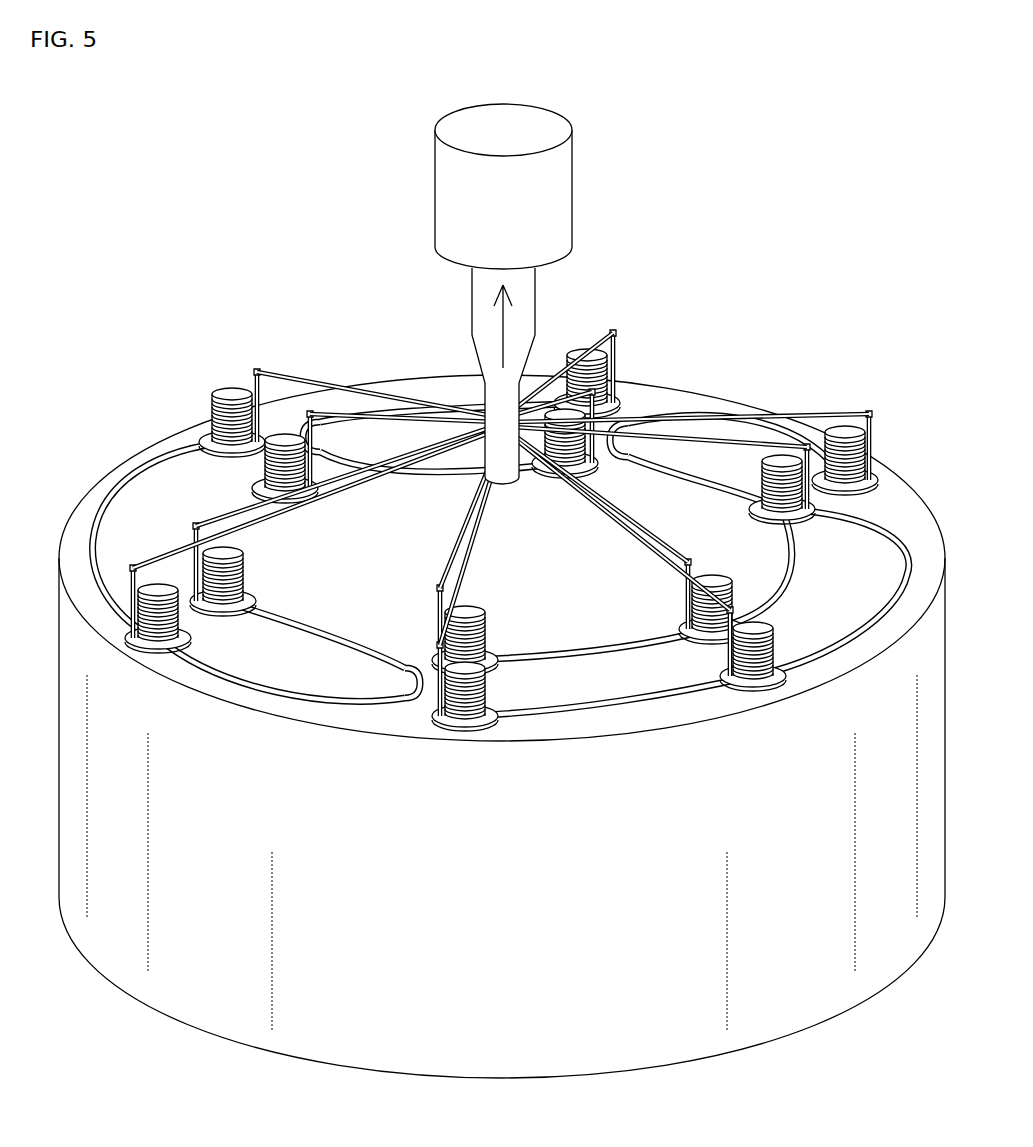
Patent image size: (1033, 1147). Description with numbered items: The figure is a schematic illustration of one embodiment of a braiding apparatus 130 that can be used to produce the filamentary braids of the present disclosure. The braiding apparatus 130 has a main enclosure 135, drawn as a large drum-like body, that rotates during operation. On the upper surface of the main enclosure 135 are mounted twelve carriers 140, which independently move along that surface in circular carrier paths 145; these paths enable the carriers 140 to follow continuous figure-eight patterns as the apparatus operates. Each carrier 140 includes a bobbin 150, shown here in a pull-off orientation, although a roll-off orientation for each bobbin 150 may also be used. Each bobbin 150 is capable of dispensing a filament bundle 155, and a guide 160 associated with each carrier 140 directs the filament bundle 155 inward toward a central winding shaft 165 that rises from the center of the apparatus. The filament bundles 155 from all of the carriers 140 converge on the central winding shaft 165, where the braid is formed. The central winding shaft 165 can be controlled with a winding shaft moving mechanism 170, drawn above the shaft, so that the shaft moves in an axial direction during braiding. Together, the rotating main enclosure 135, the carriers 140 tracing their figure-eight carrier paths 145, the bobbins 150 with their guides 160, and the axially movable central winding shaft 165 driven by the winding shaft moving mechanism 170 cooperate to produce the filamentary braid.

The braiding apparatus 130 is at (502, 591).
The main enclosure 135 is at (518, 952).
The carrier 140 is at (460, 727).
The circular carrier path 145 is at (590, 733).
The bobbin 150 is at (250, 566).
The filament bundle 155 is at (300, 372).
The guide 160 is at (254, 371).
The central winding shaft 165 is at (536, 311).
The winding shaft moving mechanism 170 is at (573, 180).